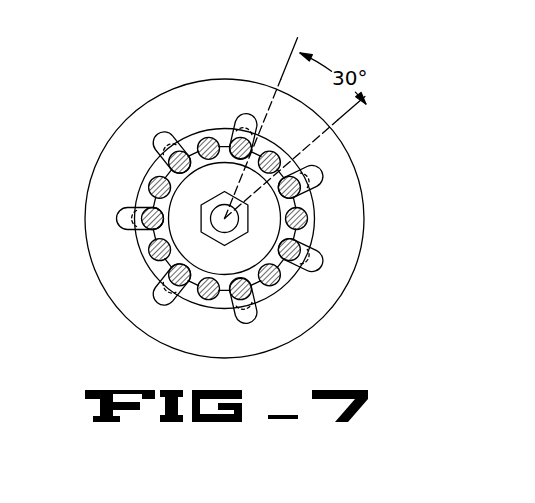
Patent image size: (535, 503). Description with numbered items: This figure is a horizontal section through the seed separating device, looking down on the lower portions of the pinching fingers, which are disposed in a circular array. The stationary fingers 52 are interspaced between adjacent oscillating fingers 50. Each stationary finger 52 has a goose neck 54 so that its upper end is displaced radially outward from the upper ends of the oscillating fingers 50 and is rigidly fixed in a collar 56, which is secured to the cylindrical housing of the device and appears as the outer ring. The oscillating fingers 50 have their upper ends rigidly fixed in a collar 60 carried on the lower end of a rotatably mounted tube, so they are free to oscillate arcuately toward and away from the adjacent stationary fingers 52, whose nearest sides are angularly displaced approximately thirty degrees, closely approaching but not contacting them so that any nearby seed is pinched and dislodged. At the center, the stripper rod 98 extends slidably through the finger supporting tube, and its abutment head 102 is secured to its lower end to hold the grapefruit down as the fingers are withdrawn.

The oscillating fingers 50 is at (148, 183).
The stationary fingers 52 is at (172, 155).
The goose neck 54 is at (236, 120).
The collar 56 is at (361, 195).
The collar 60 is at (104, 200).
The rod 98 is at (227, 211).
The abutment head 102 is at (247, 263).